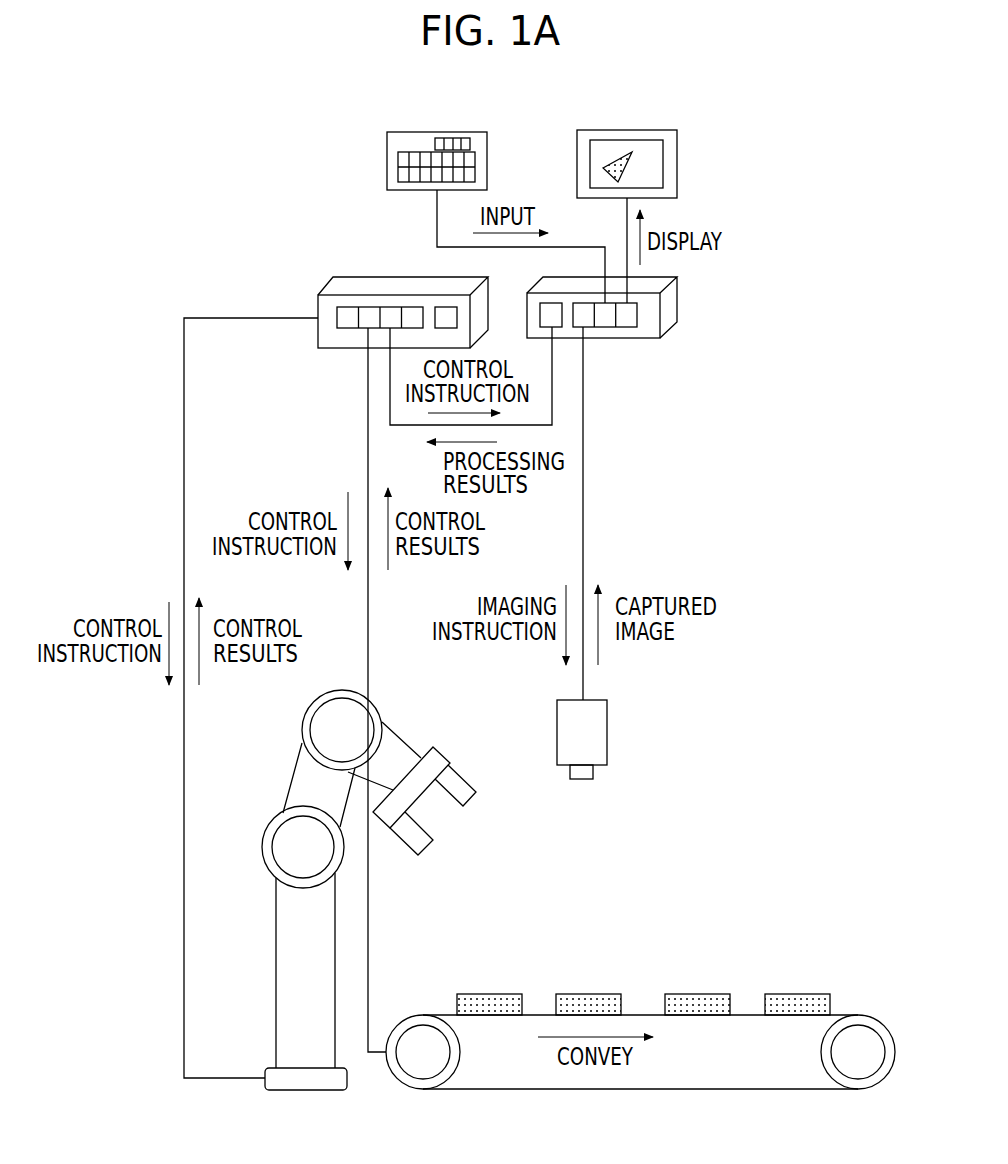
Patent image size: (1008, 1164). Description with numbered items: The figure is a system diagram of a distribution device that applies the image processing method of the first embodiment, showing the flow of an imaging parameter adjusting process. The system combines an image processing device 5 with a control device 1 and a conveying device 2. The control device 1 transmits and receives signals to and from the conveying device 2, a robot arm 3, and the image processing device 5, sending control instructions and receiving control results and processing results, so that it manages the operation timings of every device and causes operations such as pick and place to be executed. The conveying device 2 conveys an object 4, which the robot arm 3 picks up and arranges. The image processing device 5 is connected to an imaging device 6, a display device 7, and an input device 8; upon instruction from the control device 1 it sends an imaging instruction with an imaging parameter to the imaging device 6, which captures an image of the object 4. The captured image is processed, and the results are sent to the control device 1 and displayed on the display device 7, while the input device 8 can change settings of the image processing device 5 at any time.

The control device 1 is at (318, 300).
The conveying device 2 is at (515, 1088).
The robot arm 3 is at (276, 977).
The object 4 is at (575, 1000).
The image processing device 5 is at (623, 338).
The imaging device 6 is at (607, 732).
The display device 7 is at (677, 160).
The input device 8 is at (387, 152).